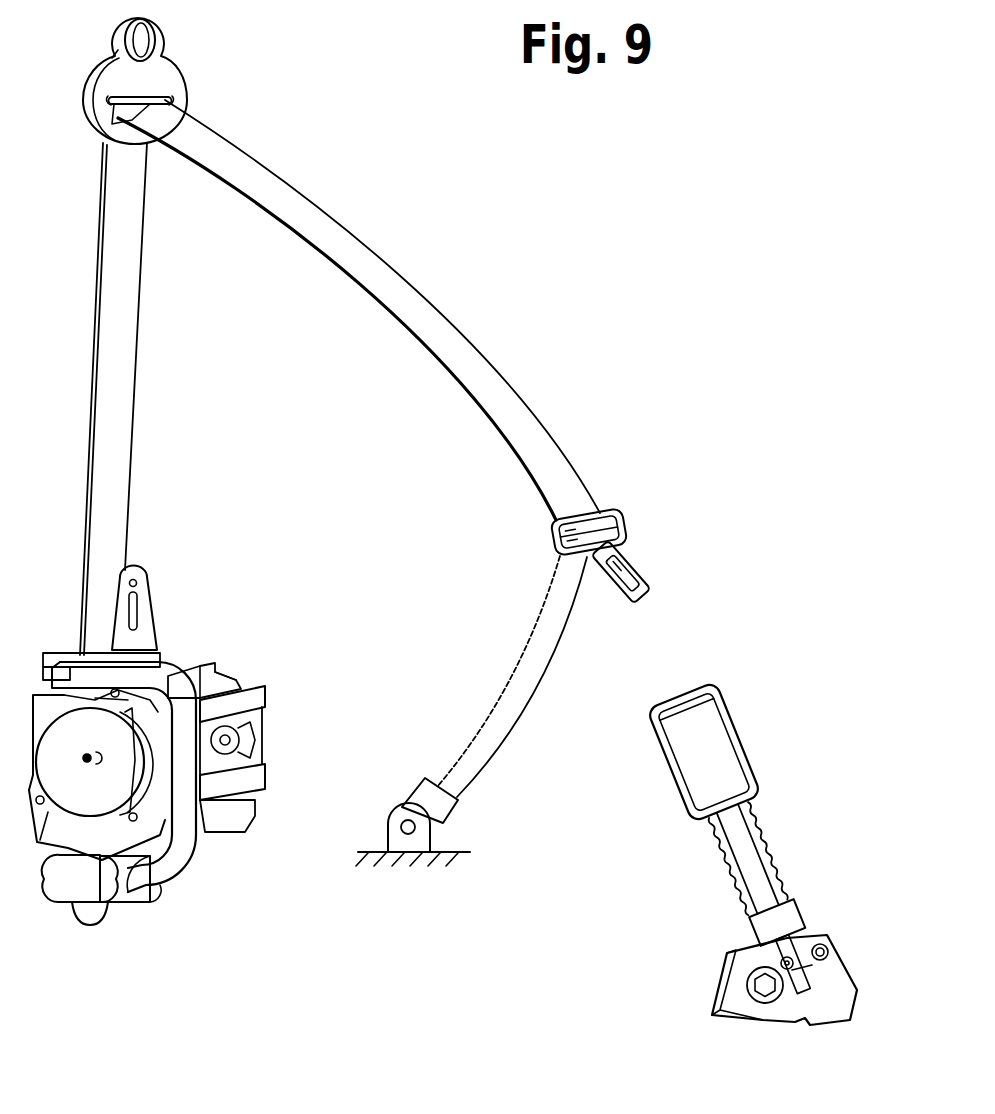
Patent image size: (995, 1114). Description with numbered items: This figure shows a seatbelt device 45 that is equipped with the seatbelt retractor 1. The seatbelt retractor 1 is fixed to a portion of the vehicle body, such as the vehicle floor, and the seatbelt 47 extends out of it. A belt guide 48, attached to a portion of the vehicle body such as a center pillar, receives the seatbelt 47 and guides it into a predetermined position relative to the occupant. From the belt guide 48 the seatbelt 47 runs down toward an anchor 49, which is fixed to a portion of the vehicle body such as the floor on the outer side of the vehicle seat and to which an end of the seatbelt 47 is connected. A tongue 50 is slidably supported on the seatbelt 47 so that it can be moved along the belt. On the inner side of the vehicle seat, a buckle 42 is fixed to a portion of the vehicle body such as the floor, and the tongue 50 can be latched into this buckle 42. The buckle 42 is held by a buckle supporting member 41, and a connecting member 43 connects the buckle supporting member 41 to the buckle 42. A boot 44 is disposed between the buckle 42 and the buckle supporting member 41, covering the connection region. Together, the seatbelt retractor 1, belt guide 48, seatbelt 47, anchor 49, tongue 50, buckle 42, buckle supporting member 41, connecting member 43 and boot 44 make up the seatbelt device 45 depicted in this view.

The seatbelt retractor 1 is at (220, 680).
The buckle supporting member 41 is at (810, 937).
The buckle 42 is at (727, 767).
The connecting member 43 is at (752, 860).
The boot 44 is at (763, 817).
The seatbelt device 45 is at (576, 247).
The seatbelt 47 is at (112, 443).
The belt guide 48 is at (177, 78).
The anchor 49 is at (387, 823).
The tongue 50 is at (632, 557).